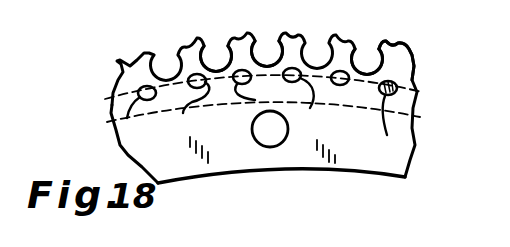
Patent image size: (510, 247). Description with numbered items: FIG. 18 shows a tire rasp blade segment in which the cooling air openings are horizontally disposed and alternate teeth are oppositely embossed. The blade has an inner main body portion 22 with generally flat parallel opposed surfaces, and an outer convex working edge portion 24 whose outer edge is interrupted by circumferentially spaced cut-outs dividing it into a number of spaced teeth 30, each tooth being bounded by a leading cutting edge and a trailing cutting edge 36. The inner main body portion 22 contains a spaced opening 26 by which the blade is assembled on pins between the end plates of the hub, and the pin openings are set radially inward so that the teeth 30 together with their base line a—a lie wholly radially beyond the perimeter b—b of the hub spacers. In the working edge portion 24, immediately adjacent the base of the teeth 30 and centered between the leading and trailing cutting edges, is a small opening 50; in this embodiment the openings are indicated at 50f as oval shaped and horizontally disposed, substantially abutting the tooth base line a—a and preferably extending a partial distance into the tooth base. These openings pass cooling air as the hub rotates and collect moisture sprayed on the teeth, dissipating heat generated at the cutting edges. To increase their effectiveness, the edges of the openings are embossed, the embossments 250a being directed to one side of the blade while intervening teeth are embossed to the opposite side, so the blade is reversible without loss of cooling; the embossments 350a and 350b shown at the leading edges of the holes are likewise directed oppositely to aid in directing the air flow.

The inner main body portion 22 is at (405, 163).
The outer working edge portion 24 is at (412, 74).
The opening 26 is at (287, 126).
The tooth 30 is at (208, 66).
The trailing cutting edge 36 is at (363, 66).
The opening 50 is at (260, 67).
The opening 50f is at (374, 114).
The embossment 250a is at (266, 100).
The curved slot 350a is at (153, 112).
The curved slot 350b is at (271, 92).
The tooth base line a is at (457, 102).
The perimeter of the hub spacers b is at (448, 127).